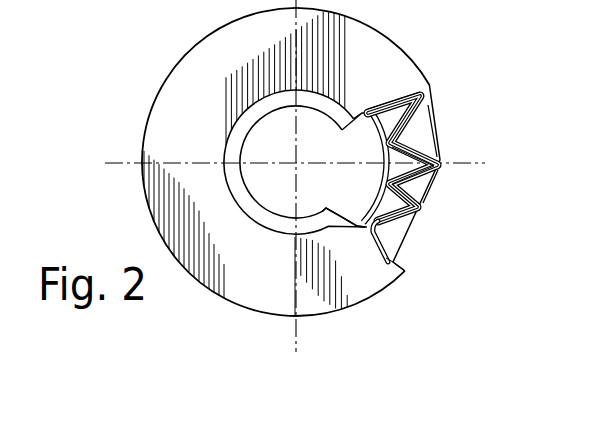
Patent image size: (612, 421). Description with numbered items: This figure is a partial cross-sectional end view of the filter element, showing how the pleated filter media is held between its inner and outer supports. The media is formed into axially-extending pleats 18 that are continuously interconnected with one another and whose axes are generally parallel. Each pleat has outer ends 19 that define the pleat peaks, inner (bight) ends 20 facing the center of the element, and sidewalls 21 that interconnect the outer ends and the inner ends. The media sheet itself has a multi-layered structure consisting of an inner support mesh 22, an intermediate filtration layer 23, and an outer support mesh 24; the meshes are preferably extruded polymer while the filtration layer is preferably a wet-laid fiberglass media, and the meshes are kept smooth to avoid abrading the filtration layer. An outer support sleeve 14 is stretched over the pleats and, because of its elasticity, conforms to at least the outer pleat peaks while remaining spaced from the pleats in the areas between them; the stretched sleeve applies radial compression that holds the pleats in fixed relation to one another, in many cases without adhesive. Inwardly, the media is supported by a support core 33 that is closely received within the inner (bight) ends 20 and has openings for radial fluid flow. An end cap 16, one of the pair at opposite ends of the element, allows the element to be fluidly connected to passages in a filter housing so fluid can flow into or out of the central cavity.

The end cap 16 is at (182, 90).
The outer support sleeve 14 is at (437, 130).
The sidewalls 21 is at (430, 110).
The outer ends 19 is at (438, 163).
The pleats 18 is at (418, 193).
The inner support mesh 22 is at (398, 218).
The intermediate filtration layer 23 is at (403, 232).
The outer support mesh 24 is at (405, 250).
The support core 33 is at (369, 120).
The inner (bight) ends 20 is at (377, 178).